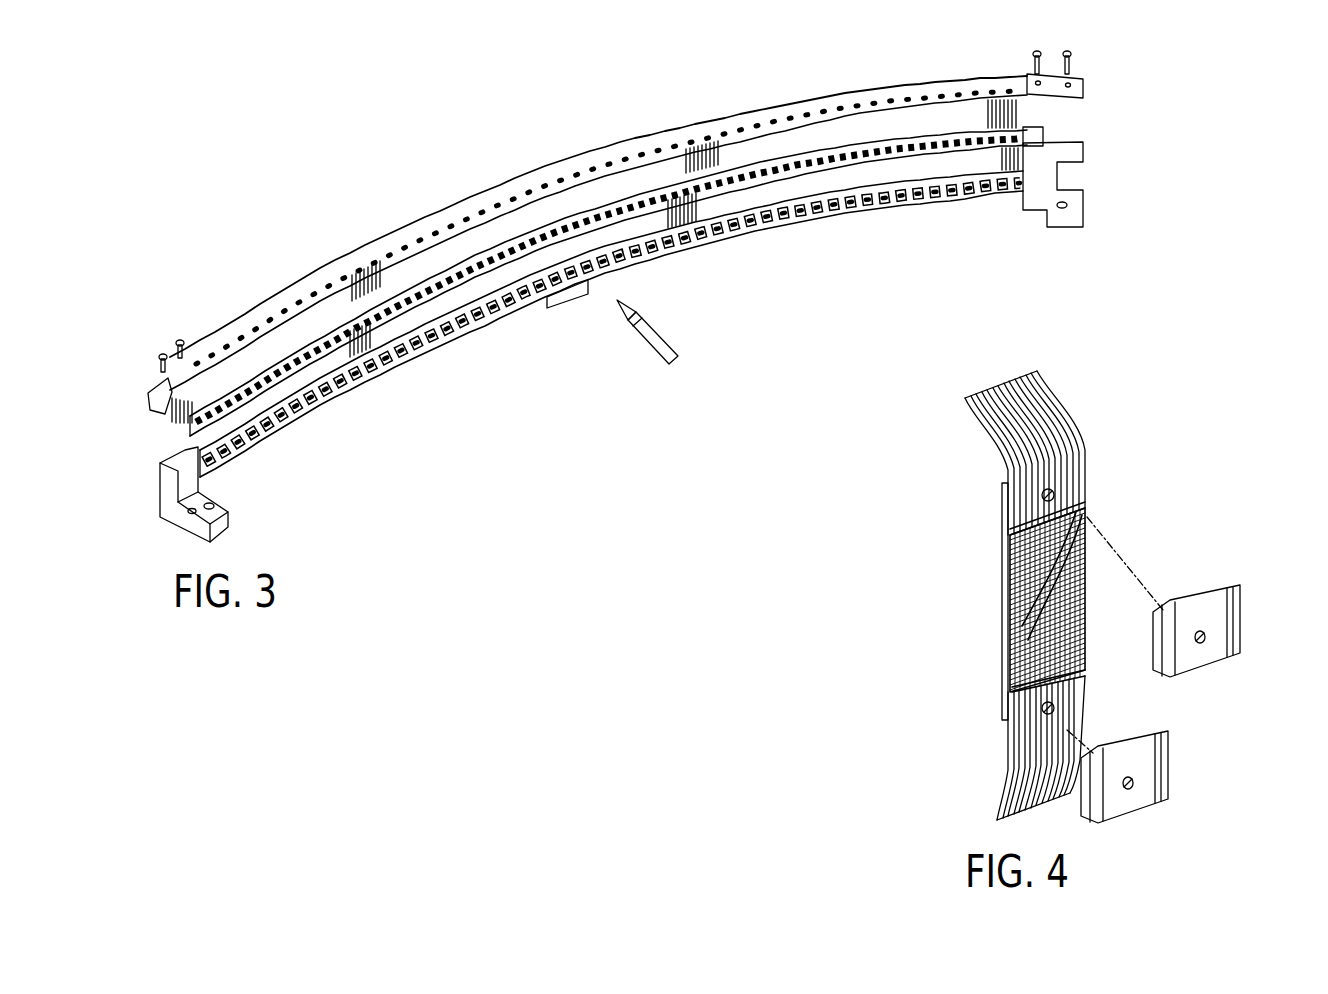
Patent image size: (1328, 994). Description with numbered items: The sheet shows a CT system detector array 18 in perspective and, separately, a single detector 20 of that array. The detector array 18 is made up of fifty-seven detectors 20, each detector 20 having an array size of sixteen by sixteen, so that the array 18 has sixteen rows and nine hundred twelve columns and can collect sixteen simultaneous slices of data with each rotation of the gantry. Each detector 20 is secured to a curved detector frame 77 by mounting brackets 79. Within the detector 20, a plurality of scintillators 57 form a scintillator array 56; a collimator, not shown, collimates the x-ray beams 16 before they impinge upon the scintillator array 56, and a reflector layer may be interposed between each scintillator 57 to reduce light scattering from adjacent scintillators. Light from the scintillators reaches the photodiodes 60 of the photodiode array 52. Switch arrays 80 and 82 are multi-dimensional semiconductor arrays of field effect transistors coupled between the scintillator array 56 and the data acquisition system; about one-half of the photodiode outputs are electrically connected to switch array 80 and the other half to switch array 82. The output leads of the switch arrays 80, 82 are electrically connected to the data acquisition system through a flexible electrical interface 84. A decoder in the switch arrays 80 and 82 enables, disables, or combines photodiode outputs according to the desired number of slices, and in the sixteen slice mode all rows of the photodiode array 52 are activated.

In FIG. 3, the x-ray beams 16 is at (646, 344).
In FIG. 3, the detector array 18 is at (499, 172).
In FIG. 3, the detector 20 is at (350, 276).
In FIG. 4, the detector 20 is at (1174, 429).
In FIG. 3, the photodiode array 52 is at (1036, 127).
In FIG. 4, the photodiode array 52 is at (996, 673).
In FIG. 3, the scintillator array 56 is at (924, 168).
In FIG. 4, the scintillator array 56 is at (1102, 583).
In FIG. 4, the scintillator 57 is at (1087, 645).
In FIG. 4, the photodiode 60 is at (1017, 557).
In FIG. 3, the detector frame 77 is at (187, 440).
In FIG. 4, the mounting bracket 79 is at (1240, 600).
In FIG. 4, the switch array 80 is at (1010, 535).
In FIG. 4, the switch array 82 is at (1080, 680).
In FIG. 4, the flexible electrical interface 84 is at (1080, 427).